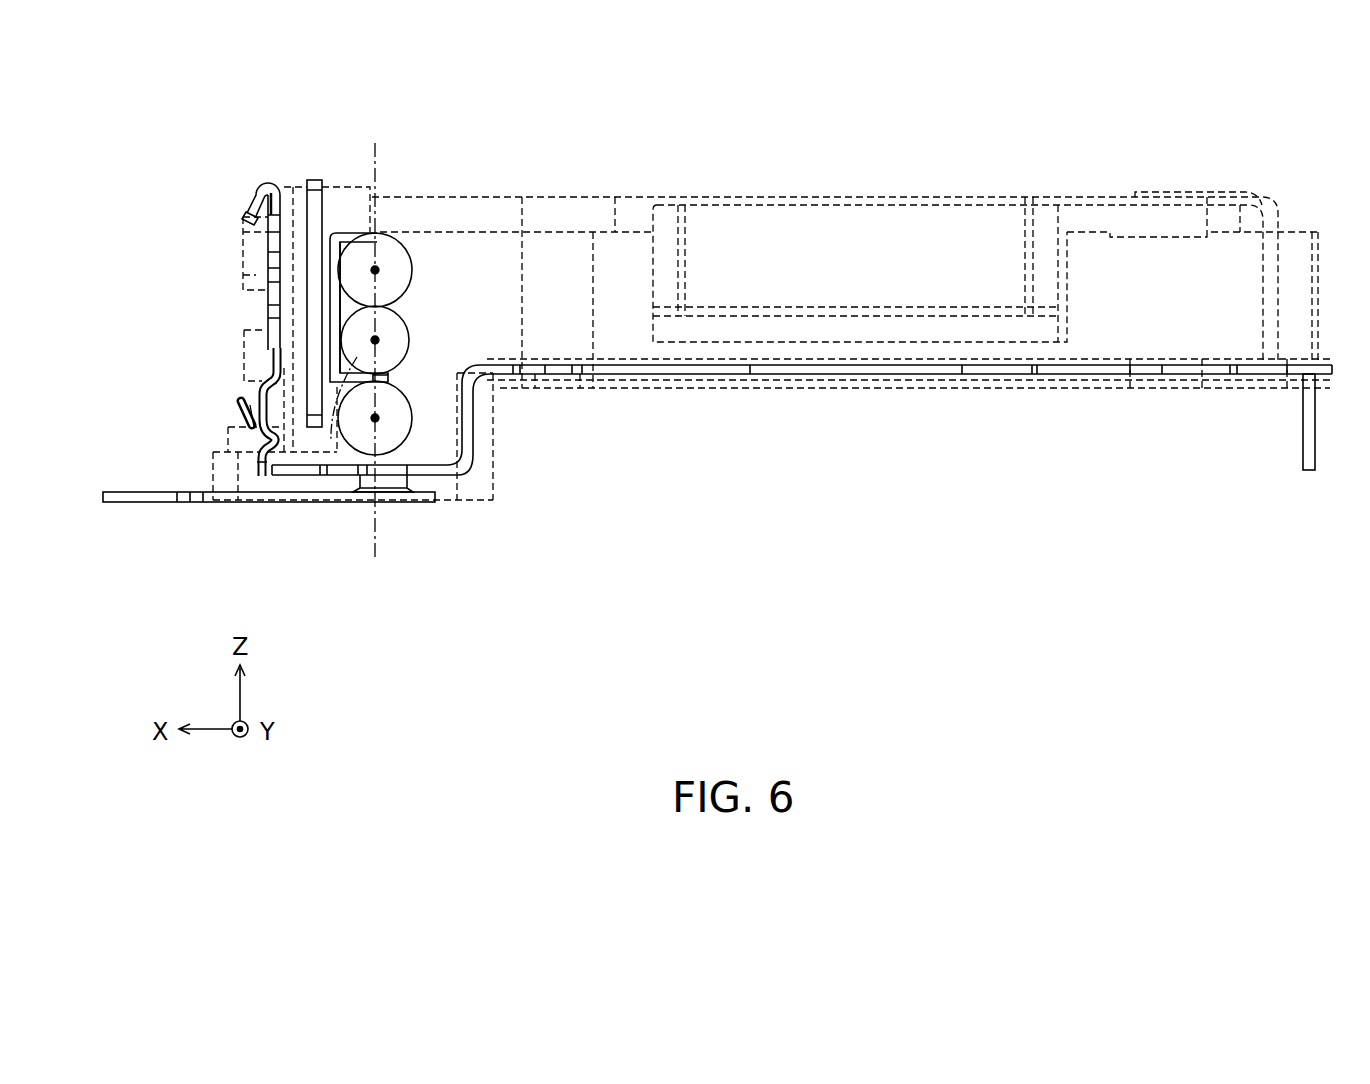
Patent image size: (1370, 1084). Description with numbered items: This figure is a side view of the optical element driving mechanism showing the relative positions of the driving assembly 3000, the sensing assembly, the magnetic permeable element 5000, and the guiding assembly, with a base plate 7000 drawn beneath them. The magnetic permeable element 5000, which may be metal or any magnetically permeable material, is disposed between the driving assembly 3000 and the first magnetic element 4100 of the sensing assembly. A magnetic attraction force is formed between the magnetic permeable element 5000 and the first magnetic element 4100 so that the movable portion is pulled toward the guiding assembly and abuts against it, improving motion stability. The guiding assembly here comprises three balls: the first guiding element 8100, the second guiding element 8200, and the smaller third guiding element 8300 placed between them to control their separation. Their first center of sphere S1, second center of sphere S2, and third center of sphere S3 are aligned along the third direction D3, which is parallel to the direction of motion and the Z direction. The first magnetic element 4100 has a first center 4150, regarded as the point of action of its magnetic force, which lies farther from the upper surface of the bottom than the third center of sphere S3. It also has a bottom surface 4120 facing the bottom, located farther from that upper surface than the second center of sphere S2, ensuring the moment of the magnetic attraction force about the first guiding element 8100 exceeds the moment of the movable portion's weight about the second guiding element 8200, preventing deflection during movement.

The driving assembly 3000 is at (266, 183).
The first magnetic element 4100 is at (347, 230).
The bottom surface 4120 is at (350, 388).
The first center 4150 is at (357, 307).
The magnetic permeable element 5000 is at (313, 177).
The base plate 7000 is at (143, 500).
The first guiding element 8100 is at (395, 253).
The second guiding element 8200 is at (390, 433).
The third guiding element 8300 is at (393, 327).
The third direction D3 is at (374, 334).
The first center of sphere S1 is at (380, 270).
The second center of sphere S2 is at (380, 417).
The third center of sphere S3 is at (380, 340).